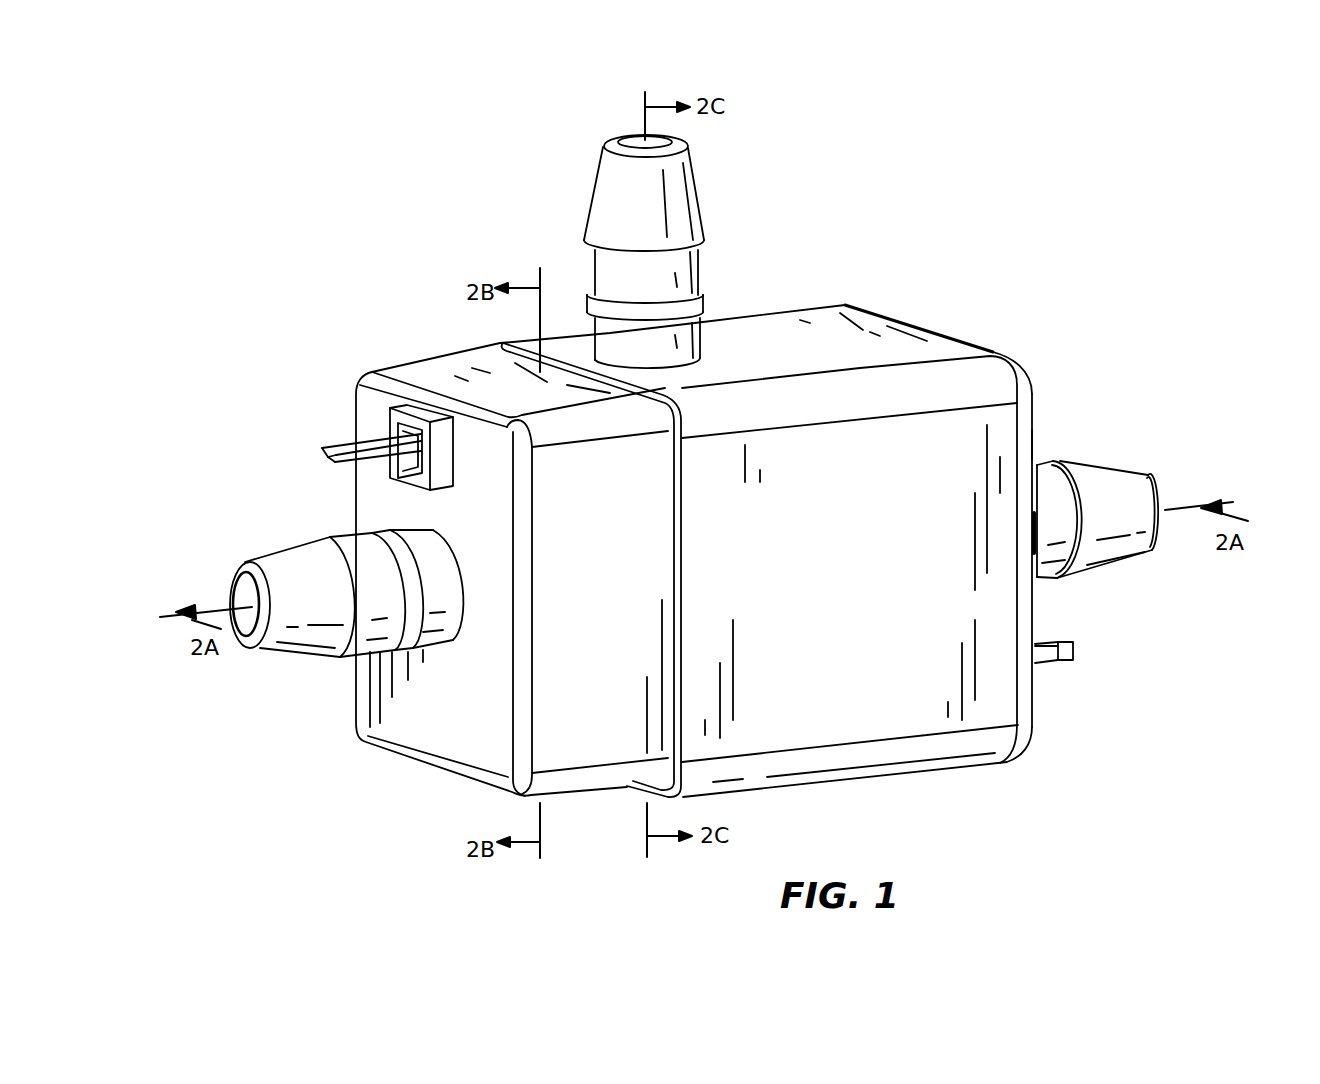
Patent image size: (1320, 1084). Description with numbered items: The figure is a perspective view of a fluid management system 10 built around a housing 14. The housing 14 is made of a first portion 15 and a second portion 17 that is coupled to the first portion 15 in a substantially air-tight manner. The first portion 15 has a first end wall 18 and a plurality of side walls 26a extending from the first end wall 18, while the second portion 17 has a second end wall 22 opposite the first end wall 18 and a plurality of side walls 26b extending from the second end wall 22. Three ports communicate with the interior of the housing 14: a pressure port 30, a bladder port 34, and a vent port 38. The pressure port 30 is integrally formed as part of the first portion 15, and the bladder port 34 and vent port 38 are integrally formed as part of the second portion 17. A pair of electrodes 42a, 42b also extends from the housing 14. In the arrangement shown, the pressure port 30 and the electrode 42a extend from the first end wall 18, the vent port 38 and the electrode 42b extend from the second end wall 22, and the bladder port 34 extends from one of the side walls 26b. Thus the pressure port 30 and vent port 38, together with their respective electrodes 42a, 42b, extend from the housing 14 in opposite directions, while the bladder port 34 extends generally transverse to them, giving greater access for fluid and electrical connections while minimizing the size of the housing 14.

The fluid management system 10 is at (461, 176).
The housing 14 is at (622, 802).
The first portion 15 is at (341, 341).
The second portion 17 is at (1040, 336).
The first end wall 18 is at (373, 416).
The second end wall 22 is at (1035, 432).
The side walls 26a is at (567, 493).
The side walls 26b is at (860, 474).
The pressure port 30 is at (307, 562).
The bladder port 34 is at (683, 212).
The vent port 38 is at (1105, 478).
The electrode 42a is at (347, 457).
The electrode 42b is at (1076, 650).